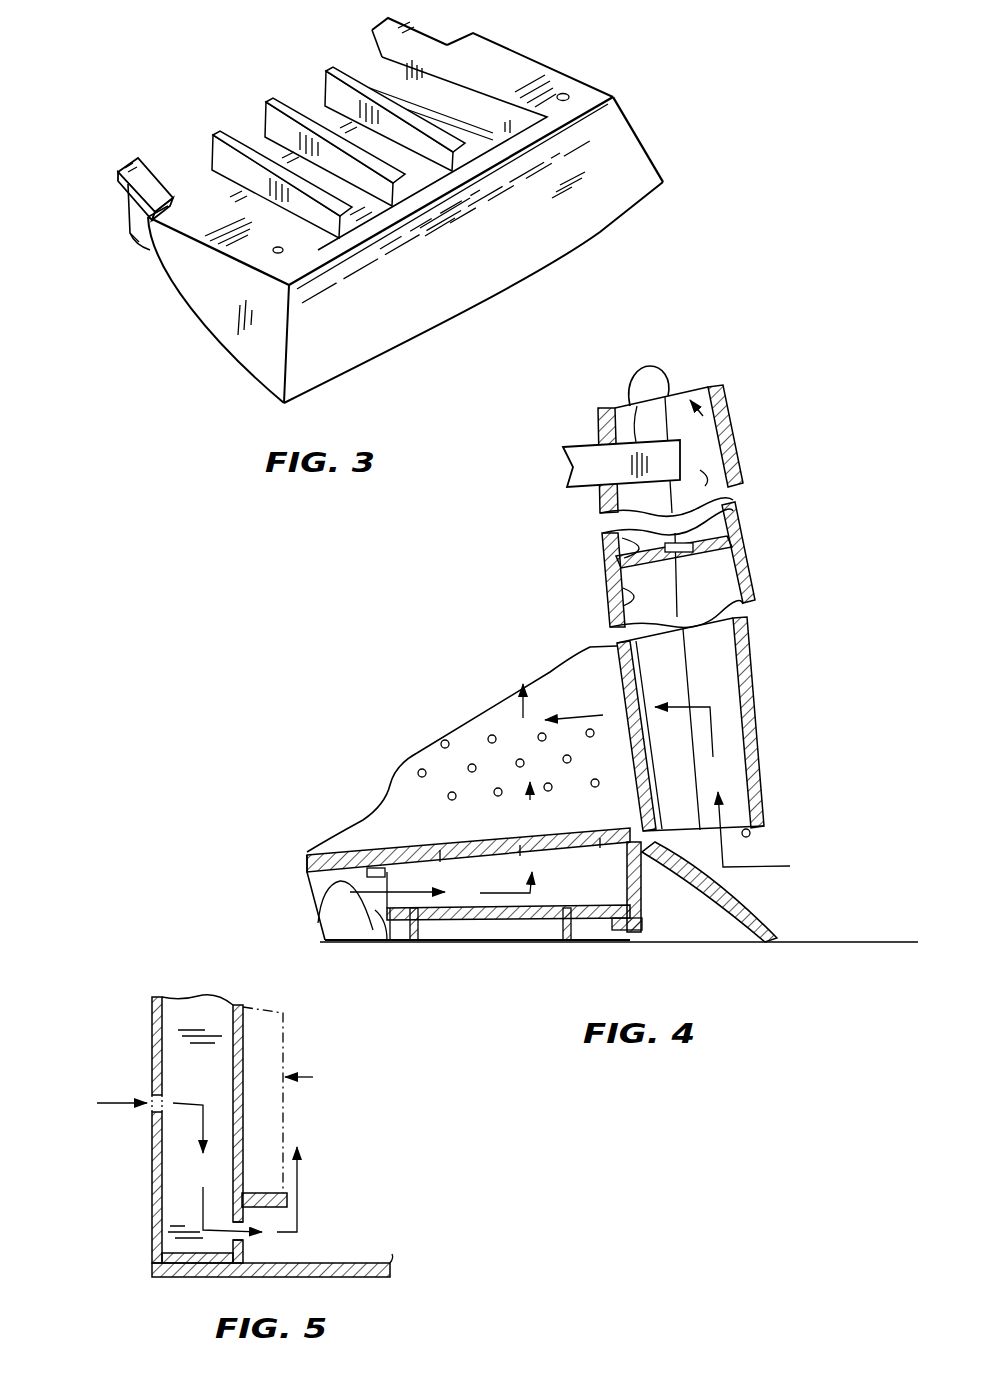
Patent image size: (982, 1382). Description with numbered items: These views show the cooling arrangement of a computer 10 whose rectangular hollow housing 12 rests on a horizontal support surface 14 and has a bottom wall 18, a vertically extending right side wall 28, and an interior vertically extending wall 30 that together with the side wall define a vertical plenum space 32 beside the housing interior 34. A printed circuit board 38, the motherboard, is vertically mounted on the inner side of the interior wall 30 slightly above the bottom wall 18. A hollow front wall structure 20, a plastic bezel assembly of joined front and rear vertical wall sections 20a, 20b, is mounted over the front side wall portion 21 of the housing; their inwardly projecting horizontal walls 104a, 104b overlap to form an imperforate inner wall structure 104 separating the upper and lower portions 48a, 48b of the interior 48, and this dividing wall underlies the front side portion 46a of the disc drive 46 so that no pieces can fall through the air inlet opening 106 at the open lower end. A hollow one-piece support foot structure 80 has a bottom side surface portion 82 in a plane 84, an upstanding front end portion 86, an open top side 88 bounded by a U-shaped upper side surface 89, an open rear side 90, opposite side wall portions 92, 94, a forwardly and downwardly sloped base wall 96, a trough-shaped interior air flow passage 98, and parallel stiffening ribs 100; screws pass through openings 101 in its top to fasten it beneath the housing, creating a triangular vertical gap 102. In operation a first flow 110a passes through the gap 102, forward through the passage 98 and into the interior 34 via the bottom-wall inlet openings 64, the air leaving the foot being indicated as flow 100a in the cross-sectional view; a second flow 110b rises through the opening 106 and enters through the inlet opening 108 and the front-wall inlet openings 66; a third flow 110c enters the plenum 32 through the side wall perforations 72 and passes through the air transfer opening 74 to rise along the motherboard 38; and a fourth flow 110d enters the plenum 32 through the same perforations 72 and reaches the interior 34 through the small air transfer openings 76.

In FIG. 4, the computer 10 is at (812, 553).
In FIG. 4, the housing 12 is at (482, 710).
In FIG. 4, the support surface 14 is at (858, 936).
In FIG. 4, the bottom wall 18 is at (317, 850).
In FIG. 5, the bottom wall 18 is at (390, 1278).
In FIG. 4, the front wall structure 20 is at (740, 425).
In FIG. 4, the front vertical wall section 20a is at (757, 707).
In FIG. 4, the rear vertical wall section 20b is at (607, 596).
In FIG. 4, the front side wall portion 21 is at (603, 568).
In FIG. 5, the right side wall 28 is at (152, 1035).
In FIG. 4, the interior wall 30 is at (423, 817).
In FIG. 5, the interior wall 30 is at (247, 1036).
In FIG. 5, the plenum space 32 is at (178, 1186).
In FIG. 4, the housing interior 34 is at (423, 765).
In FIG. 5, the housing interior 34 is at (310, 1198).
In FIG. 5, the printed circuit board 38 is at (315, 1069).
In FIG. 4, the disc drive 46 is at (579, 432).
In FIG. 4, the front side portion 46a is at (628, 400).
In FIG. 4, the interior 48 is at (704, 374).
In FIG. 4, the upper portion 48a is at (725, 478).
In FIG. 4, the lower portion 48b is at (714, 639).
In FIG. 4, the ambient air inlet openings 64 is at (608, 822).
In FIG. 4, the ambient air inlet openings 66 is at (612, 695).
In FIG. 5, the perforations 72 is at (152, 1132).
In FIG. 5, the air transfer opening 74 is at (245, 1243).
In FIG. 4, the air transfer openings 76 is at (492, 735).
In FIG. 3, the support foot structure 80 is at (714, 66).
In FIG. 4, the support foot structure 80 is at (774, 915).
In FIG. 3, the bottom side surface portion 82 is at (147, 240).
In FIG. 4, the bottom side surface portion 82 is at (493, 941).
In FIG. 4, the plane 84 is at (892, 942).
In FIG. 3, the front end portion 86 is at (578, 225).
In FIG. 4, the front end portion 86 is at (718, 922).
In FIG. 3, the open top side 88 is at (372, 40).
In FIG. 4, the open top side 88 is at (470, 850).
In FIG. 3, the upper side surface 89 is at (513, 67).
In FIG. 3, the open rear side 90 is at (253, 140).
In FIG. 4, the open rear side 90 is at (392, 922).
In FIG. 3, the side wall portion 92 is at (232, 345).
In FIG. 3, the side wall portion 94 is at (642, 122).
In FIG. 4, the side wall portion 94 is at (697, 921).
In FIG. 3, the base wall 96 is at (327, 117).
In FIG. 4, the base wall 96 is at (567, 916).
In FIG. 3, the interior air flow passage 98 is at (214, 185).
In FIG. 4, the interior air flow passage 98 is at (632, 940).
In FIG. 3, the ribs 100 is at (429, 96).
In FIG. 4, the ribs 100 is at (605, 877).
In FIG. 4, the air passage 100a is at (540, 812).
In FIG. 3, the openings 101 is at (568, 96).
In FIG. 4, the vertical gap 102 is at (353, 920).
In FIG. 4, the inner wall structure 104 is at (712, 563).
In FIG. 4, the horizontal wall 104a is at (706, 531).
In FIG. 4, the horizontal wall 104b is at (620, 553).
In FIG. 4, the air inlet opening 106 is at (740, 834).
In FIG. 4, the air inlet opening 108 is at (645, 803).
In FIG. 4, the first flow of ambient air 110a is at (307, 900).
In FIG. 4, the second flow of ambient air 110b is at (523, 678).
In FIG. 5, the third flow of ambient air 110c is at (112, 1100).
In FIG. 4, the fourth flow of ambient air 110d is at (510, 705).